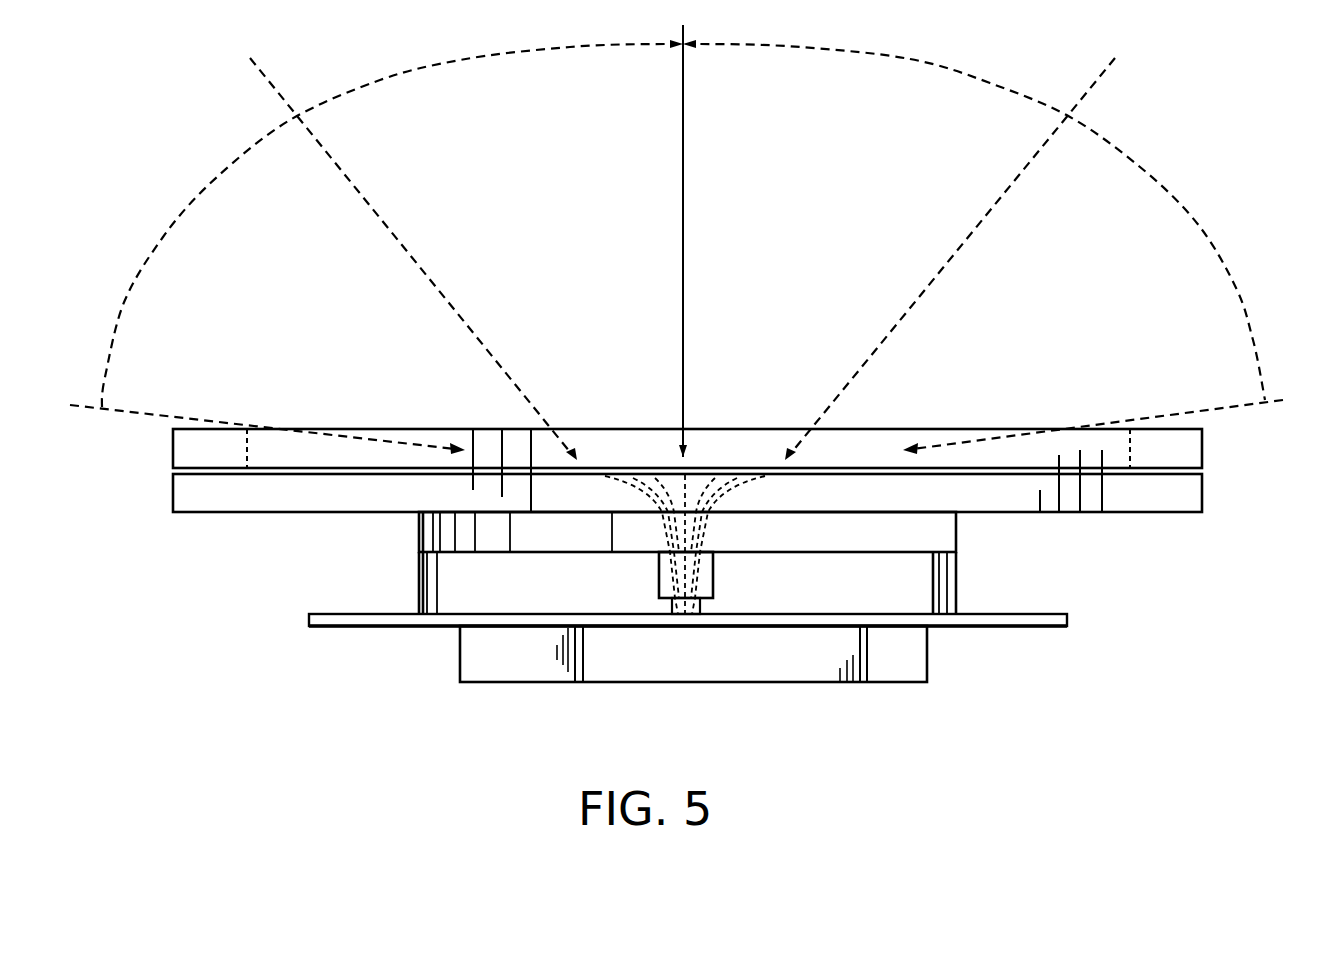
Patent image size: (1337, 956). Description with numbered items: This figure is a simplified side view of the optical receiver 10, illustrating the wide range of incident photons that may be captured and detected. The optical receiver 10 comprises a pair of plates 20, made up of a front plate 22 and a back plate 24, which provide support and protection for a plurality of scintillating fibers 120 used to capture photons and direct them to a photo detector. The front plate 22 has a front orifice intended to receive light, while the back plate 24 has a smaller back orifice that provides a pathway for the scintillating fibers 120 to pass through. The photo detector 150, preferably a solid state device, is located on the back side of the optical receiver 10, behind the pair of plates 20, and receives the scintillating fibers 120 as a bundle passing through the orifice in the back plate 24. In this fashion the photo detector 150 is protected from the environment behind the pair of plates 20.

The optical receiver 10 is at (215, 567).
The pair of plates 20 is at (1252, 466).
The front plate 22 is at (1195, 440).
The back plate 24 is at (1203, 494).
The scintillating fibers 120 is at (733, 492).
The photo detector 150 is at (820, 668).